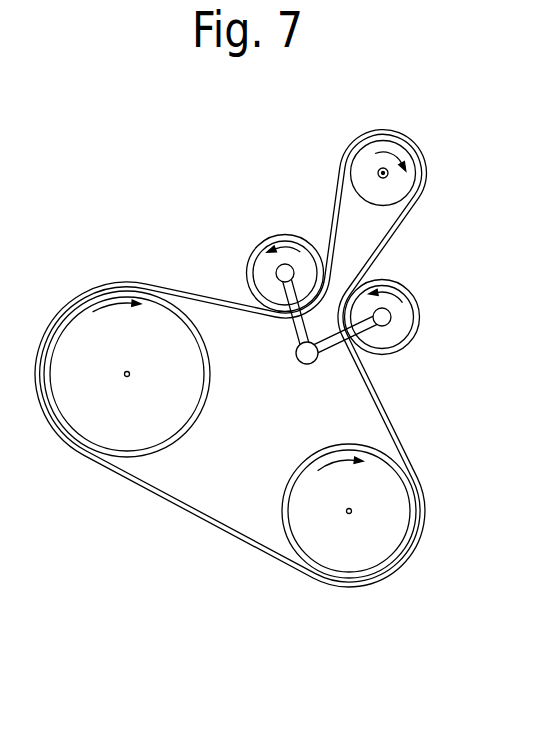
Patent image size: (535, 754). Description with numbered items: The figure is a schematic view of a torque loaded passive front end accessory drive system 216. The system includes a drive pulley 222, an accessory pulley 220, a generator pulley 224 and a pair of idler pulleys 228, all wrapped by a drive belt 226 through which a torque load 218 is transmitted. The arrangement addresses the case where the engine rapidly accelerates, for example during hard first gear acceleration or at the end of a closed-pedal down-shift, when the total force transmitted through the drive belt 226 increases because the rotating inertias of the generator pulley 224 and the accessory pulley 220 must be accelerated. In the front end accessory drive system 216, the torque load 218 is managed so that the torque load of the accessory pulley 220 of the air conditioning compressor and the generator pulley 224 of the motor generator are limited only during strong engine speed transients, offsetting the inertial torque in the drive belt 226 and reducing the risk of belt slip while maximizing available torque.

The front end accessory drive system 216 is at (414, 119).
The torque load 218 is at (195, 520).
The accessory pulley 220 is at (357, 557).
The drive pulley 222 is at (93, 426).
The generator pulley 224 is at (365, 180).
The drive belt 226 is at (197, 303).
The idler pulleys 228 is at (400, 316).